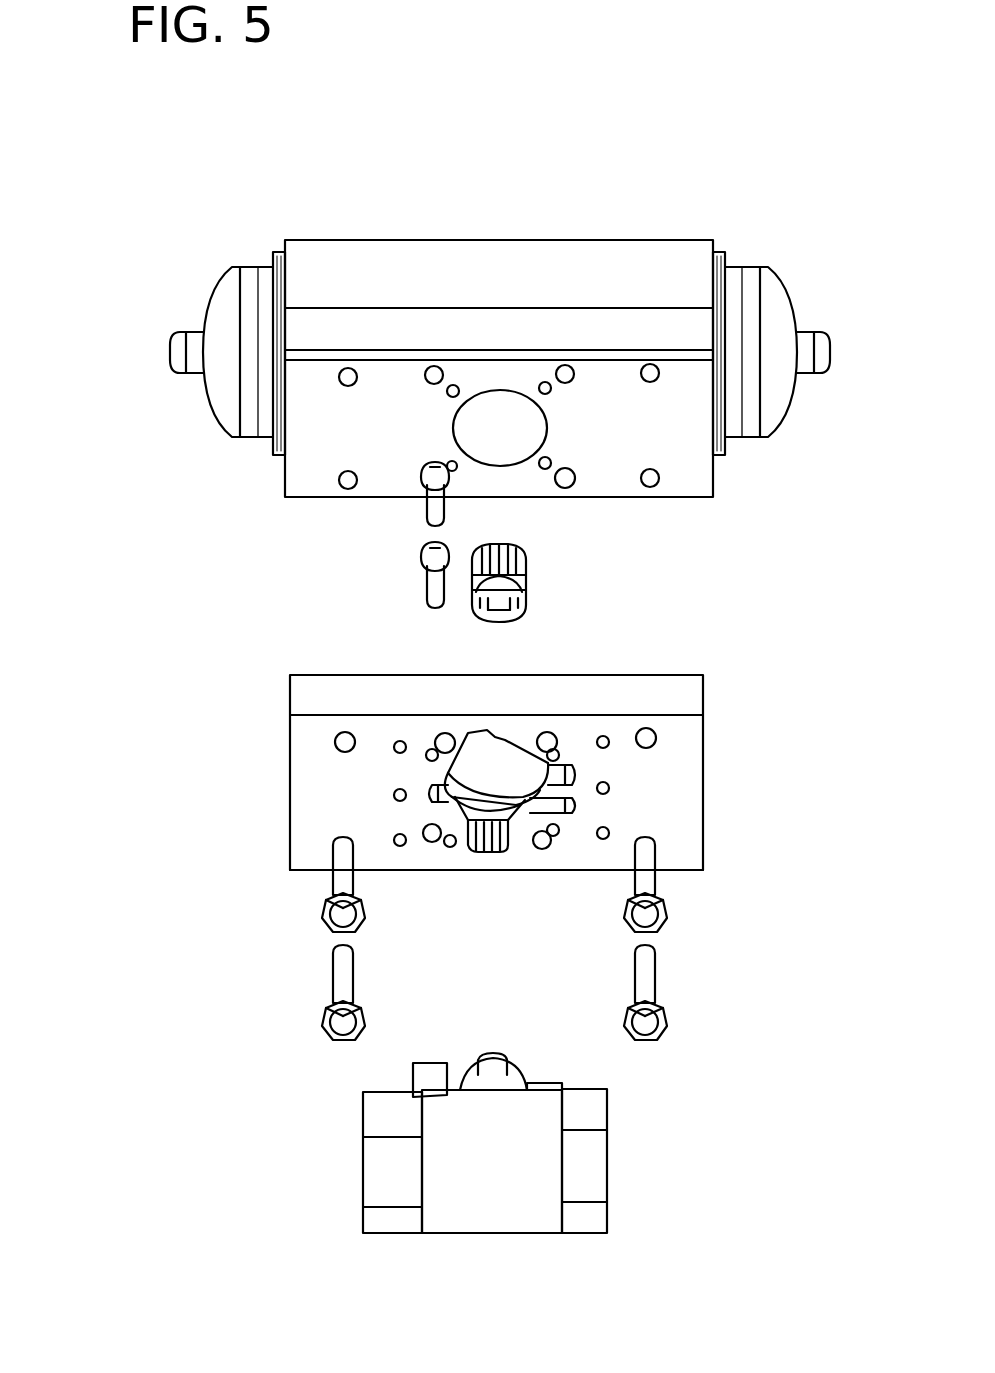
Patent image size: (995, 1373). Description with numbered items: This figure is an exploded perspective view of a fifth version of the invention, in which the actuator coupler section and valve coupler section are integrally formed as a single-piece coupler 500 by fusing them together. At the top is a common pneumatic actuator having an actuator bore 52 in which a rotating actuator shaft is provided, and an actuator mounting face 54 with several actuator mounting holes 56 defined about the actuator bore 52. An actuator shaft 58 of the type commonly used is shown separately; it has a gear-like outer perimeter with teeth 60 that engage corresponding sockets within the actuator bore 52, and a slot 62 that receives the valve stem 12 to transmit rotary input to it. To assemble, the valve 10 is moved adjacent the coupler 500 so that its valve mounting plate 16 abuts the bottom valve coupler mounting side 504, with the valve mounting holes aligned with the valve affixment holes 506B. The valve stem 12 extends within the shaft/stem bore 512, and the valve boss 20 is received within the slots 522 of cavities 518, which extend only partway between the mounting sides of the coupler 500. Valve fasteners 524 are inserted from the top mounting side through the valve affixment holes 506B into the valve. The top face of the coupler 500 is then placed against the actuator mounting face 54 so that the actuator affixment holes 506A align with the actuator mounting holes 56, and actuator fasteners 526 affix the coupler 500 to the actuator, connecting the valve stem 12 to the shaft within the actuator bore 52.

The valve 10 is at (363, 1165).
The valve stem 12 is at (507, 1060).
The valve mounting plate 16 is at (413, 1072).
The valve boss 20 is at (553, 1085).
The actuator bore 52 is at (493, 392).
The actuator mounting face 54 is at (690, 462).
The actuator mounting holes 56 is at (655, 484).
The actuator shaft 58 is at (528, 583).
The teeth 60 is at (522, 553).
The slot 62 is at (500, 600).
The coupler 500 is at (290, 786).
The valve coupler mounting side 504 is at (305, 820).
The actuator affixment holes 506A is at (656, 738).
The valve affixment holes 506B is at (436, 742).
The shaft/stem bore 512 is at (520, 803).
The cavities 518 is at (500, 852).
The slots 522 is at (472, 852).
The valve fasteners 524 is at (418, 565).
The actuator fasteners 526 is at (658, 968).